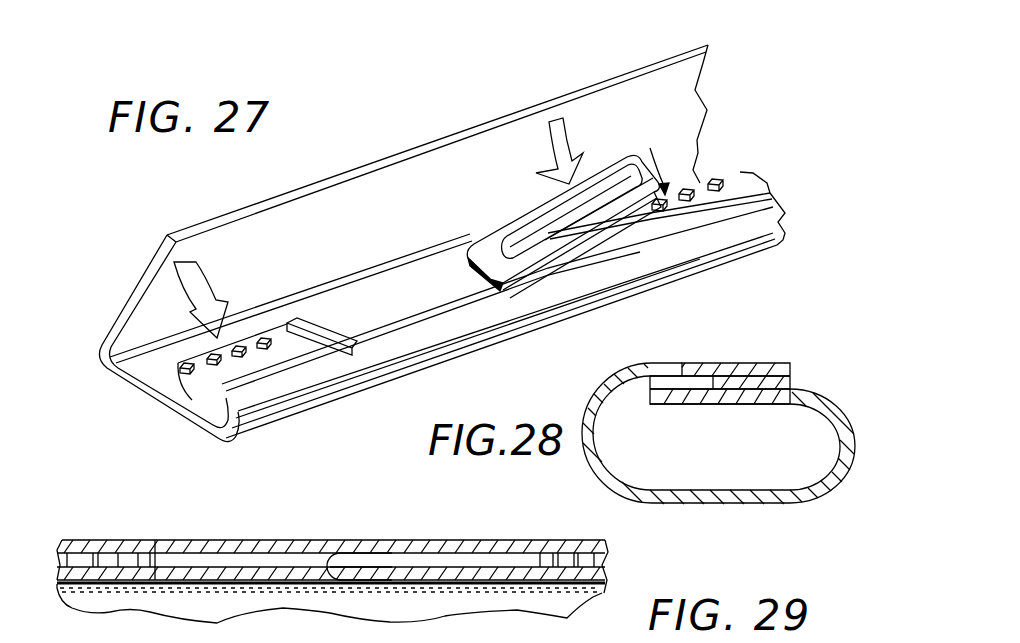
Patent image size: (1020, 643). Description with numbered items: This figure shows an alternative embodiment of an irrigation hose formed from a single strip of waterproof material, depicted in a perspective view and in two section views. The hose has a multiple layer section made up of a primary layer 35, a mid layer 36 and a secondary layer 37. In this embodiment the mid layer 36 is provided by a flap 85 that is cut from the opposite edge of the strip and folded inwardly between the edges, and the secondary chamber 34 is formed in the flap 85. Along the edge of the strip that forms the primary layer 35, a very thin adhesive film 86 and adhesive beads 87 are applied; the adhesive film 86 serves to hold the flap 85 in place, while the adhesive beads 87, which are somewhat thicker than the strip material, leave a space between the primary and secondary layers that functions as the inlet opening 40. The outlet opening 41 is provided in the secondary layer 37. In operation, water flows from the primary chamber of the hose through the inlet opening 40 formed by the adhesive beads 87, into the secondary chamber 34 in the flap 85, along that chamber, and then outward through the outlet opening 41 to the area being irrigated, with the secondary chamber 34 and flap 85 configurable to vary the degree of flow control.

In FIG. 27, the secondary chamber 34 is at (565, 222).
In FIG. 28, the secondary chamber 34 is at (727, 393).
In FIG. 29, the secondary chamber 34 is at (378, 556).
In FIG. 28, the primary layer 35 is at (683, 391).
In FIG. 29, the primary layer 35 is at (220, 583).
In FIG. 27, the mid layer 36 is at (600, 212).
In FIG. 28, the mid layer 36 is at (688, 362).
In FIG. 28, the secondary layer 37 is at (777, 363).
In FIG. 27, the inlet opening 40 is at (712, 200).
In FIG. 27, the outlet opening 41 is at (530, 224).
In FIG. 28, the outlet opening 41 is at (713, 363).
In FIG. 29, the outlet opening 41 is at (372, 543).
In FIG. 27, the flap 85 is at (575, 112).
In FIG. 28, the flap 85 is at (790, 384).
In FIG. 27, the adhesive film 86 is at (625, 158).
In FIG. 27, the adhesive beads 87 is at (763, 196).
In FIG. 29, the adhesive beads 87 is at (153, 556).